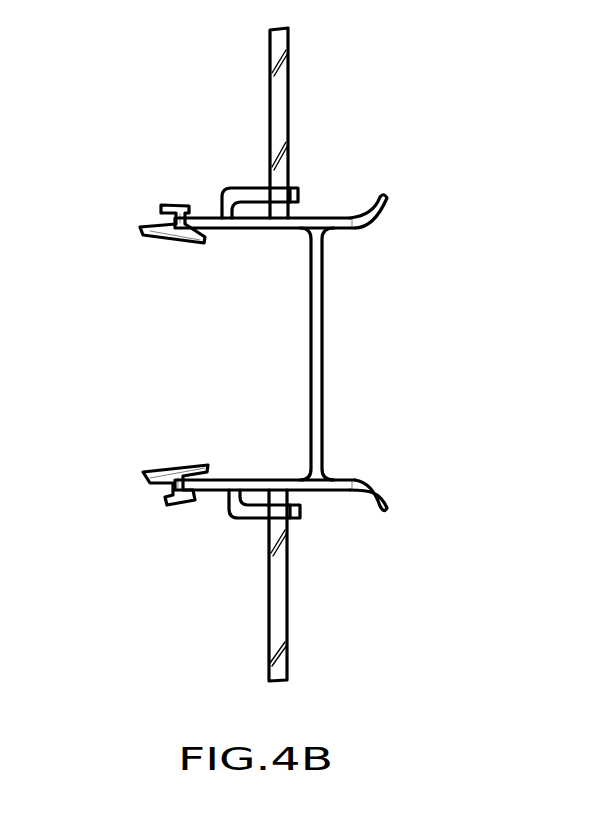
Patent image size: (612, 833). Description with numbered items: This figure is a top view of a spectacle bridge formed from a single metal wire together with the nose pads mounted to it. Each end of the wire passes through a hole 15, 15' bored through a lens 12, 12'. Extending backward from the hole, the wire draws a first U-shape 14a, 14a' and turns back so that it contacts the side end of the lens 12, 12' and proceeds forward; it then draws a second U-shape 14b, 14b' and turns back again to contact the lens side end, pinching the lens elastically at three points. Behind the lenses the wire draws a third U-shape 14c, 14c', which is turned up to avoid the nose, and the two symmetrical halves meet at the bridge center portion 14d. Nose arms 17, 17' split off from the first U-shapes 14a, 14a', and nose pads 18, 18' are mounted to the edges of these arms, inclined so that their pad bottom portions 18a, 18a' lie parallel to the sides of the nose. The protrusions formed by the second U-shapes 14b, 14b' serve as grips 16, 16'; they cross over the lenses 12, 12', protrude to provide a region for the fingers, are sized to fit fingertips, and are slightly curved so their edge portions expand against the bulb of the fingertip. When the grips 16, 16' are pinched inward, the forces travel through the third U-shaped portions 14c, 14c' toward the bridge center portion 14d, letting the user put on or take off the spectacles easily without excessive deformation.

The lens 12 is at (323, 591).
The other lens 12' is at (339, 123).
The first U-shape 14a is at (236, 553).
The first U-shape 14a' is at (236, 153).
The second U-shape 14b is at (415, 488).
The second U-shape 14b' is at (417, 196).
The third U-shape 14c is at (265, 434).
The third U-shaped portion 14c' is at (265, 274).
The bridge center portion 14d is at (316, 372).
The hole 15 is at (326, 544).
The hole 15' is at (339, 159).
The grip 16 is at (383, 444).
The grip 16' is at (397, 262).
The nose arm 17 is at (136, 546).
The nose arm 17' is at (153, 172).
The nose pad 18 is at (130, 501).
The nose pad 18' is at (131, 209).
The pad bottom portion 18a is at (151, 428).
The pad bottom portion 18a' is at (147, 281).